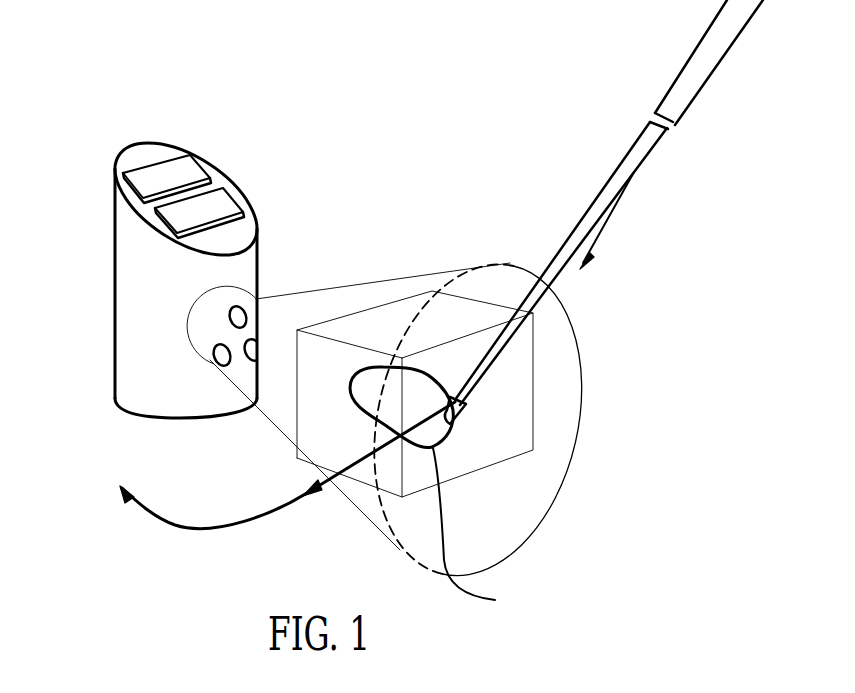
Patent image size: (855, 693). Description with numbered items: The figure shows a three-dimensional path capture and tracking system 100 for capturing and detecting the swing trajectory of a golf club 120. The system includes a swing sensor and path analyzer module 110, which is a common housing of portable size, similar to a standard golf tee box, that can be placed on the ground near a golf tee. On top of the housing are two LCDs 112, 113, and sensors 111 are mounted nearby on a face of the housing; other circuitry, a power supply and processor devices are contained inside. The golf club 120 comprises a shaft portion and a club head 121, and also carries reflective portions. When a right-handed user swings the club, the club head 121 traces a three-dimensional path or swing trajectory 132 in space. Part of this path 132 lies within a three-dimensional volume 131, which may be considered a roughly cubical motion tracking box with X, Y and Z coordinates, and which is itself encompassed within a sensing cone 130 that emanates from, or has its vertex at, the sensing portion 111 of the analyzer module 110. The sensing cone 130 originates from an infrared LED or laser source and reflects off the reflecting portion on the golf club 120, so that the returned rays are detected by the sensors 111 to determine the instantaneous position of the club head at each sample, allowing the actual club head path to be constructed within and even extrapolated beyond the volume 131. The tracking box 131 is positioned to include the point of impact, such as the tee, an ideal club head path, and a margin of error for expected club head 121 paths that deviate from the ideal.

The 3D path capture and tracking system 100 is at (72, 26).
The 3D swing sensor and path analyzer module 110 is at (258, 222).
The sensors 111 is at (218, 358).
The LCD 112 is at (188, 166).
The LCD 113 is at (222, 199).
The golf club 120 is at (645, 125).
The club head 121 is at (442, 489).
The sensing cone 130 is at (372, 507).
The 3D volume 131 is at (533, 413).
The swing trajectory 132 is at (602, 232).